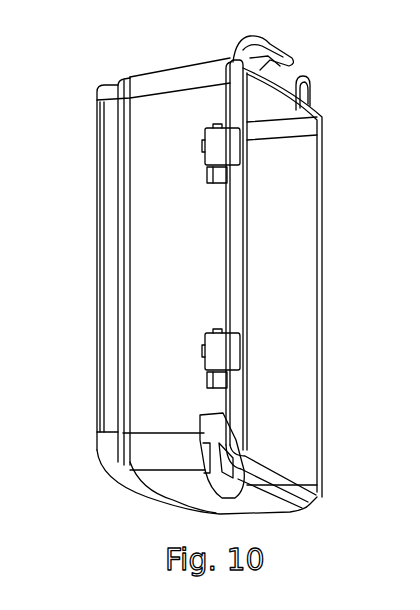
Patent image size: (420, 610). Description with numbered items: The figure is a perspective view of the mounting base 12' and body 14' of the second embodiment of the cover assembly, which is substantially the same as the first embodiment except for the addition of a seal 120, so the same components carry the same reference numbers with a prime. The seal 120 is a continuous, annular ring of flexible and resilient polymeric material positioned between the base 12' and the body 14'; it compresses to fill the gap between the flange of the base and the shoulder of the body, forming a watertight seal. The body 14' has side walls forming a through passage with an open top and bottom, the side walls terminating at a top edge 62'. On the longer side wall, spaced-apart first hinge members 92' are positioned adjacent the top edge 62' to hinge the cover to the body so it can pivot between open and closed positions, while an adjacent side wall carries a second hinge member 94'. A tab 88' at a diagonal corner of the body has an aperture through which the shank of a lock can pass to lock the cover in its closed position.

The mounting base 12' is at (80, 250).
The body 14' is at (209, 274).
The seal 120 is at (122, 79).
The second hinge member 94' is at (283, 52).
The tab 88' is at (253, 287).
The first hinge members 92' is at (196, 256).
The top edge 62' is at (271, 492).